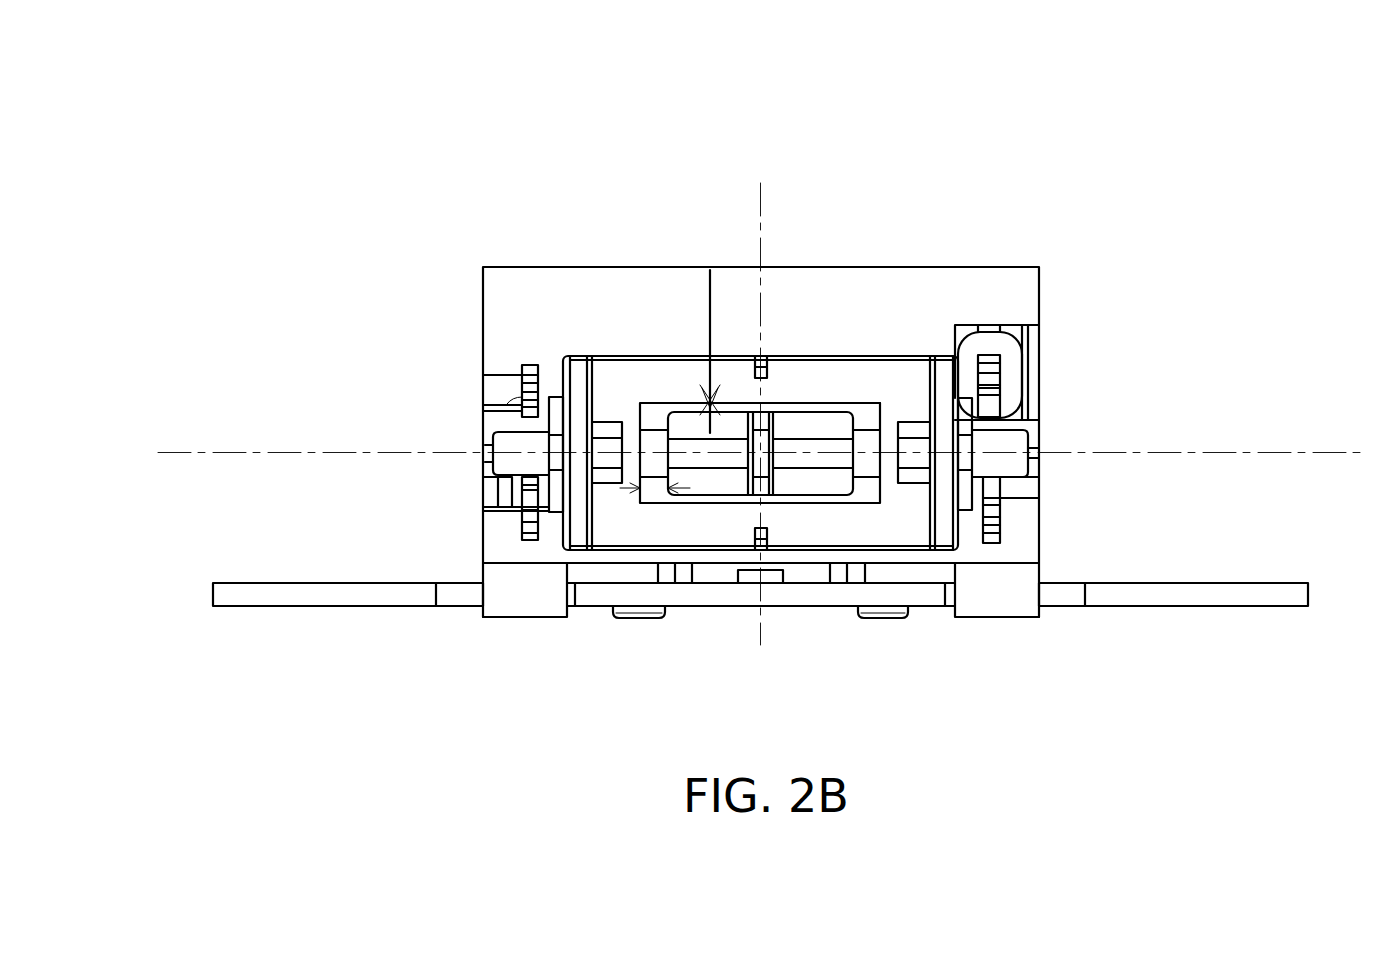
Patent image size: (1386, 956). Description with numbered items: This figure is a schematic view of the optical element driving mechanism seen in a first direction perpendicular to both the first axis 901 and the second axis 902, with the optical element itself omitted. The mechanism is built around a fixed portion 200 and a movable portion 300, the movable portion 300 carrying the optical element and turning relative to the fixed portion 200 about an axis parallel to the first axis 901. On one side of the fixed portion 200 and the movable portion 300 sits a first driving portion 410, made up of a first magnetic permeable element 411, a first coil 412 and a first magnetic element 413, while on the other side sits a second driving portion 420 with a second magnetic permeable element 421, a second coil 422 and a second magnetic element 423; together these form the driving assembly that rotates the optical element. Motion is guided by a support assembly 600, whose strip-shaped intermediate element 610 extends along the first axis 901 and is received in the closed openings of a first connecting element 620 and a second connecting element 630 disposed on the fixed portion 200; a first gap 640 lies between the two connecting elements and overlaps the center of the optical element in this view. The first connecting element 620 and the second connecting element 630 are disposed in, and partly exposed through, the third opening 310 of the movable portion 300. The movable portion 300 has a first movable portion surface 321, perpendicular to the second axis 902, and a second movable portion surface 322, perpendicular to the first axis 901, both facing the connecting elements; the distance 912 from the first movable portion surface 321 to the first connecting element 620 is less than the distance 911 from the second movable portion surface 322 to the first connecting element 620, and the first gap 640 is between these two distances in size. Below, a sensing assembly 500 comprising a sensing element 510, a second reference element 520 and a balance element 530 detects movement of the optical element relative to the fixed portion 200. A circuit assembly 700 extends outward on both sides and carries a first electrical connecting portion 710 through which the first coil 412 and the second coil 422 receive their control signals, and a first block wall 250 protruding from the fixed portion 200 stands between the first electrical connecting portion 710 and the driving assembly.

The fixed portion 200 is at (533, 310).
The first block wall 250 is at (528, 590).
The movable portion 300 is at (677, 375).
The third opening 310 is at (774, 352).
The first movable portion surface 321 is at (830, 403).
The second movable portion surface 322 is at (557, 398).
The first driving portion 410 is at (433, 365).
The first magnetic permeable element 411 is at (520, 388).
The first coil 412 is at (512, 490).
The first magnetic element 413 is at (557, 427).
The second driving portion 420 is at (1052, 380).
The second magnetic permeable element 421 is at (990, 397).
The second coil 422 is at (1008, 370).
The second magnetic element 423 is at (963, 488).
The sensing assembly 500 is at (761, 653).
The sensing element 510 is at (742, 585).
The second reference element 520 is at (777, 572).
The balance element 530 is at (758, 357).
The support assembly 600 is at (827, 374).
The intermediate element 610 is at (640, 462).
The first connecting element 620 is at (710, 462).
The second connecting element 630 is at (812, 462).
The first gap 640 is at (770, 465).
The circuit assembly 700 is at (760, 607).
The first electrical connecting portion 710 is at (416, 583).
The first axis 901 is at (734, 454).
The second axis 902 is at (763, 397).
The distance 911 is at (653, 493).
The distance 912 is at (710, 270).